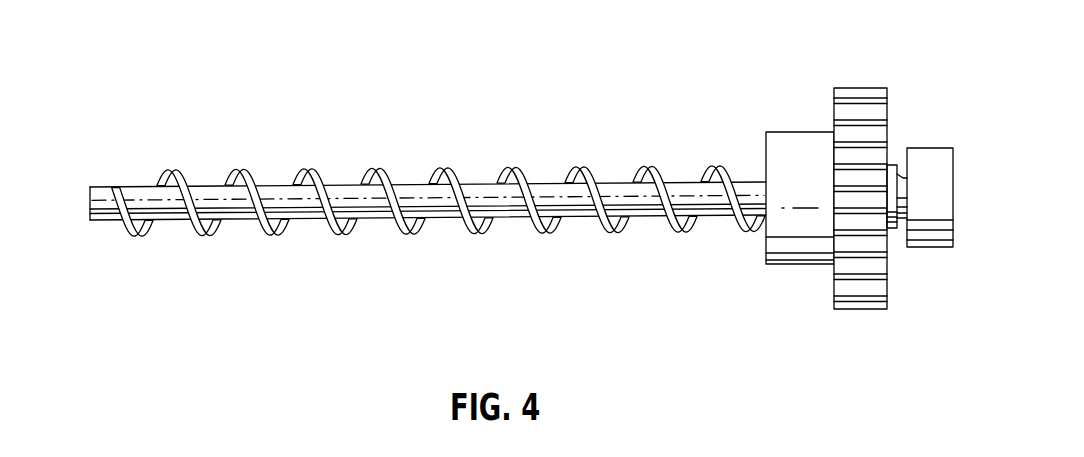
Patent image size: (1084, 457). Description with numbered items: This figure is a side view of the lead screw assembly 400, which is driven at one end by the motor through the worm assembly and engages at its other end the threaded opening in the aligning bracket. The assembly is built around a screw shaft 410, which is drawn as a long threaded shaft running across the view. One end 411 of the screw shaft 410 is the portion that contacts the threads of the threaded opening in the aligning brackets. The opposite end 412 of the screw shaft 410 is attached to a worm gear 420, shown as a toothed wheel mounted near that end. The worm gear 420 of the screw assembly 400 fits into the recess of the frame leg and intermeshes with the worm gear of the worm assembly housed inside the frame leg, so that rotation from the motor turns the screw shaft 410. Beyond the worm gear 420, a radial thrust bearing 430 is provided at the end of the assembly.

The lead screw assembly 400 is at (540, 136).
The screw shaft 410 is at (410, 185).
The one end of the screw shaft 411 is at (95, 187).
The opposite end of the screw shaft 412 is at (766, 182).
The worm gear 420 is at (857, 88).
The radial thrust bearing 430 is at (923, 148).